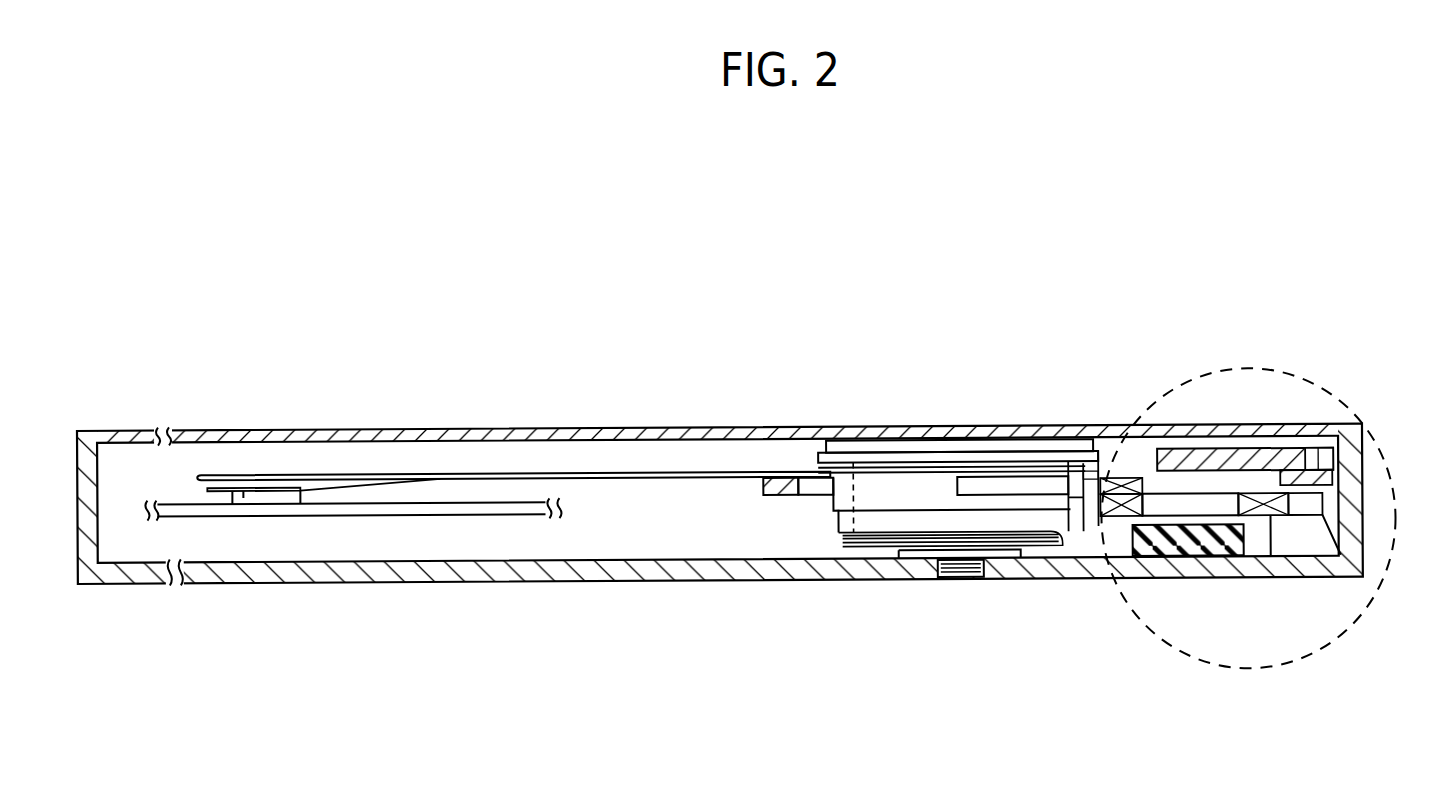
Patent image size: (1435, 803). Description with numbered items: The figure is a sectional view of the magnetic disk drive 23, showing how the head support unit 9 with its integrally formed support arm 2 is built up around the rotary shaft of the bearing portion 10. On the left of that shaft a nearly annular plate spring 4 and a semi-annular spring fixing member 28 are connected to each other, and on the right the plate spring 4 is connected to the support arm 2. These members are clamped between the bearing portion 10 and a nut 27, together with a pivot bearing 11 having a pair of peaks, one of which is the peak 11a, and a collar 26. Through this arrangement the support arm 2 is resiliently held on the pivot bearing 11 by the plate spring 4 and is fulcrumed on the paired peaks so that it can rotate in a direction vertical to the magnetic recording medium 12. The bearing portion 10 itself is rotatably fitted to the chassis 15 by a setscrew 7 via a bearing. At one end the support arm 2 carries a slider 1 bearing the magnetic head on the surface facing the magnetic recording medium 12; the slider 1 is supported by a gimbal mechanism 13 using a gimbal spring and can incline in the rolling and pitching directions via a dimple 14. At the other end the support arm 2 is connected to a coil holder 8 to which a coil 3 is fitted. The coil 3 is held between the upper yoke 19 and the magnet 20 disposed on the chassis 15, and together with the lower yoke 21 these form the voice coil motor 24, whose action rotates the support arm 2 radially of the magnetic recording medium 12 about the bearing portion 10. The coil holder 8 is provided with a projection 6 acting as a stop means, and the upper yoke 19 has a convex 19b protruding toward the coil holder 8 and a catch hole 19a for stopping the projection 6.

The slider 1 is at (243, 498).
The support arm 2 is at (514, 480).
The coil 3 is at (1268, 529).
The plate spring 4 is at (921, 475).
The projection 6 is at (1300, 497).
The setscrew 7 is at (978, 451).
The coil holder 8 is at (1072, 526).
The head support unit 9 is at (507, 403).
The bearing portion 10 is at (878, 452).
The pivot bearing 11 is at (815, 468).
The peak 11a is at (963, 473).
The magnetic recording medium 12 is at (402, 520).
The gimbal mechanism 13 is at (314, 488).
The dimple 14 is at (263, 488).
The chassis 15 is at (600, 578).
The upper yoke 19 is at (1248, 376).
The catch hole 19a is at (1323, 465).
The convex 19b is at (1268, 485).
The magnet 20 is at (1172, 564).
The lower yoke 21 is at (1226, 567).
The magnetic disk drive 23 is at (684, 758).
The voice coil motor 24 is at (1216, 674).
The collar 26 is at (840, 499).
The nut 27 is at (1040, 524).
The spring fixing member 28 is at (818, 469).